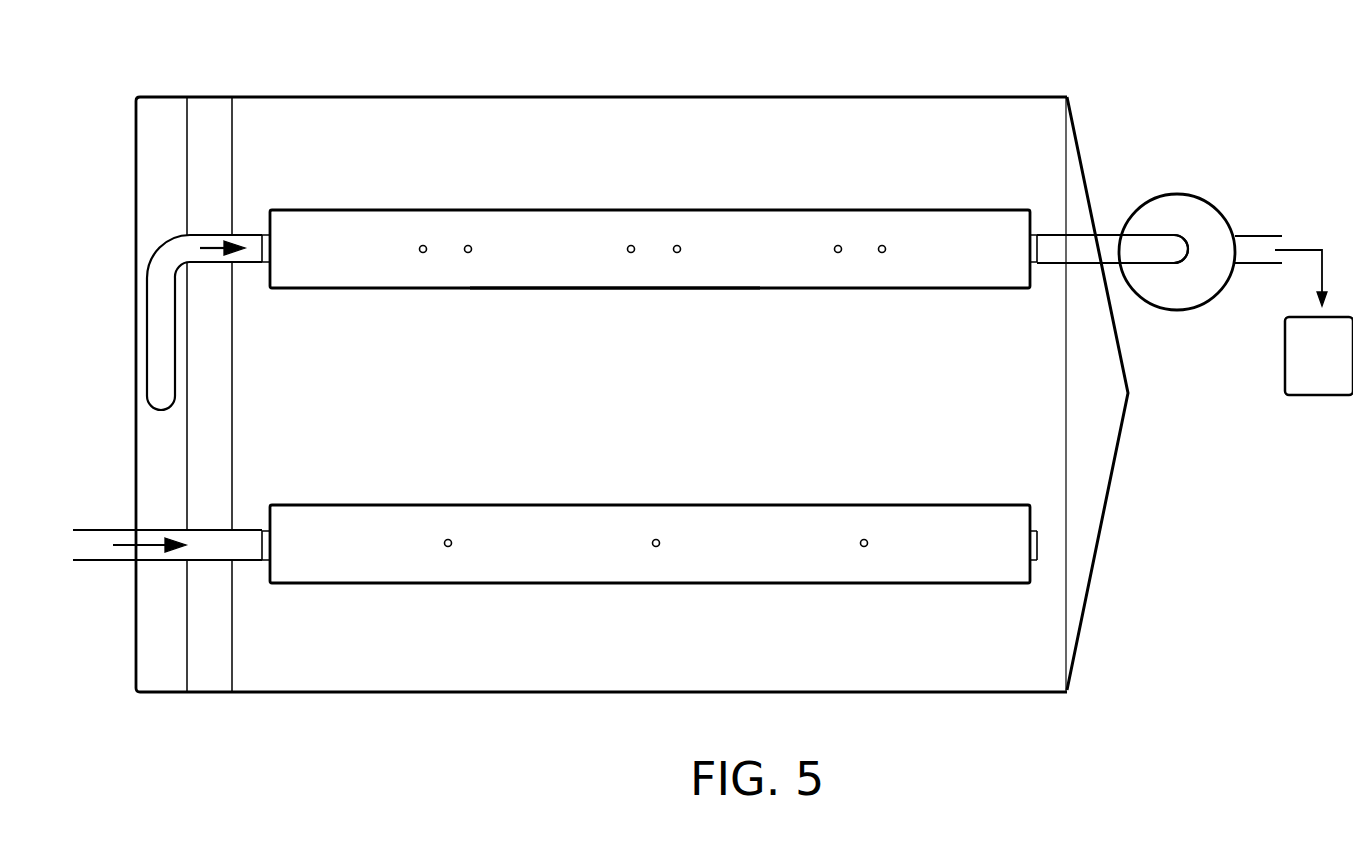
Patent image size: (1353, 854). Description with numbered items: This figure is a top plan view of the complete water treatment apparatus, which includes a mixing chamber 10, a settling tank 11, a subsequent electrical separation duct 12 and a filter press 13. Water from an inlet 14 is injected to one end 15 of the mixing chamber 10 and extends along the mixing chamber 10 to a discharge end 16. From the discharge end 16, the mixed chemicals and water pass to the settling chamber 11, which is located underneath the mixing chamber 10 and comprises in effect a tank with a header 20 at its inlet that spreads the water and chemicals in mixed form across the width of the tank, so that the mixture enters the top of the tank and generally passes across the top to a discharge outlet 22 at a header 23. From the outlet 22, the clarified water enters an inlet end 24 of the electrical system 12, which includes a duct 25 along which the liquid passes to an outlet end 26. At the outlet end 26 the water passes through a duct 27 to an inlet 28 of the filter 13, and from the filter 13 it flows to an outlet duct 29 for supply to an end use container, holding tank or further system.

The mixing chamber 10 is at (550, 504).
The settling tank 11 is at (404, 692).
The electrical separation duct 12 is at (577, 210).
The filter press 13 is at (1183, 193).
The inlet 14 is at (115, 529).
The one end of the mixing chamber 15 is at (287, 503).
The discharge end 16 is at (1012, 503).
The header 20 is at (1090, 584).
The discharge outlet 22 is at (170, 392).
The header 23 is at (172, 690).
The inlet end 24 is at (285, 210).
The duct 25 is at (603, 281).
The outlet end 26 is at (1018, 282).
The duct 27 is at (1080, 245).
The inlet of the filter 28 is at (1190, 240).
The outlet duct 29 is at (1255, 235).